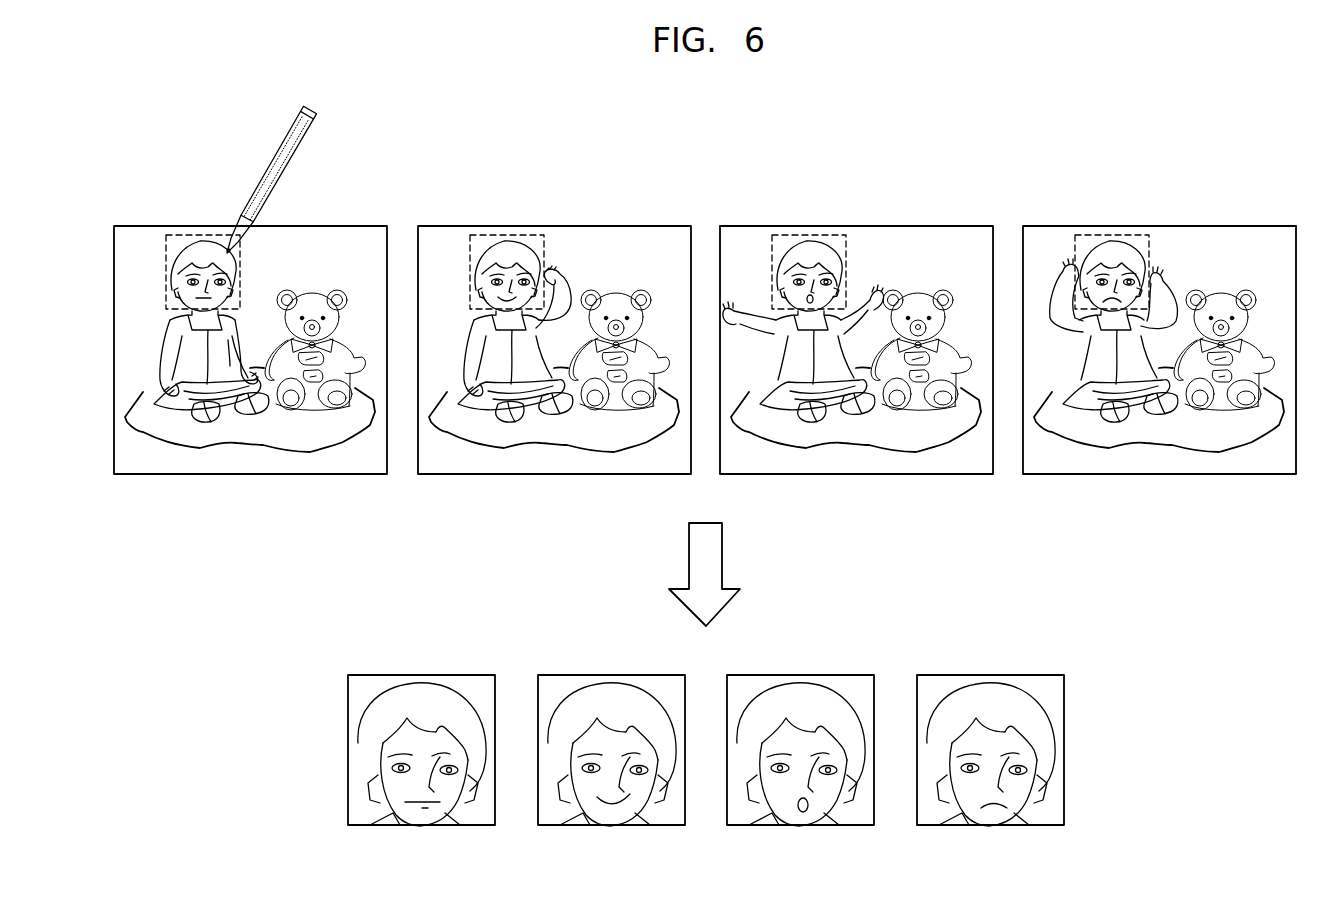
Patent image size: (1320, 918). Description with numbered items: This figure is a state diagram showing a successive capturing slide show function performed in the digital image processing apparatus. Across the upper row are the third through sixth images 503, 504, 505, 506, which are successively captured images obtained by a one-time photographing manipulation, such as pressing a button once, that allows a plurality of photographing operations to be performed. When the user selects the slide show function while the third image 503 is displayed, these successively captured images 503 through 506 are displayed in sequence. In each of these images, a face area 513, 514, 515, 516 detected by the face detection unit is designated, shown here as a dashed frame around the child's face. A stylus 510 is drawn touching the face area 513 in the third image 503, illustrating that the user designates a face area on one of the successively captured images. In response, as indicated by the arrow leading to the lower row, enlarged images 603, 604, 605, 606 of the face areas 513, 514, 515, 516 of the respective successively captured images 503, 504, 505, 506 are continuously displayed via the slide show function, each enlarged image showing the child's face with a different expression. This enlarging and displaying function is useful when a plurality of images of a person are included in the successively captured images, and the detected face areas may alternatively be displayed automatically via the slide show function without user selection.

The stylus 510 is at (302, 150).
The third image 503 is at (252, 334).
The fourth image 504 is at (556, 334).
The fifth image 505 is at (859, 334).
The sixth image 506 is at (1162, 334).
The face area 513 is at (241, 272).
The face area 514 is at (544, 272).
The face area 515 is at (846, 272).
The face area 516 is at (1149, 272).
The enlarged image 603 is at (428, 673).
The enlarged image 604 is at (618, 673).
The enlarged image 605 is at (808, 673).
The enlarged image 606 is at (998, 673).